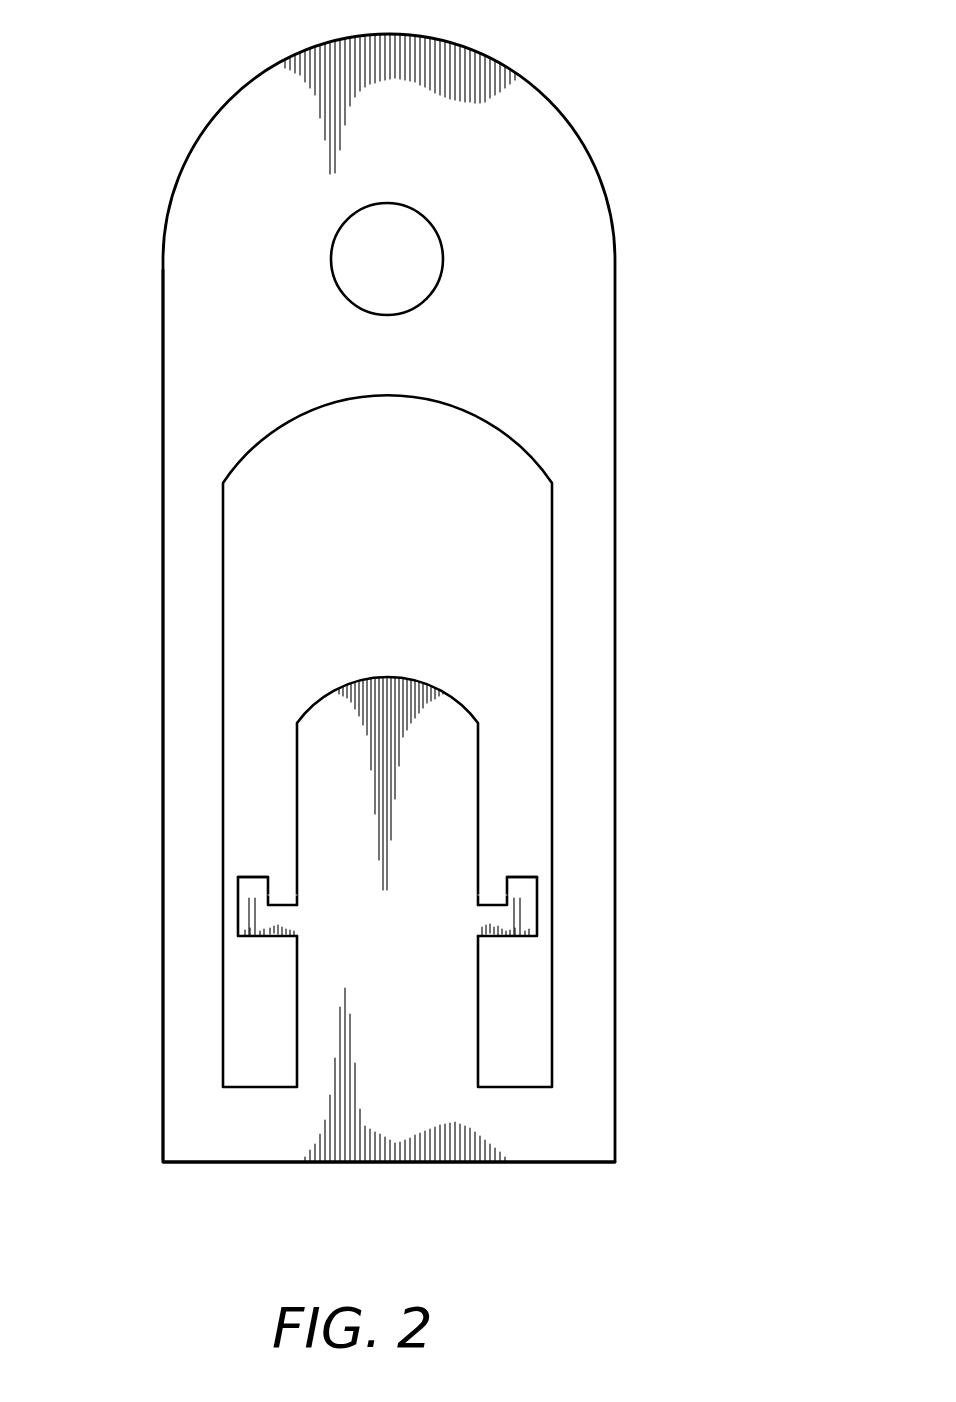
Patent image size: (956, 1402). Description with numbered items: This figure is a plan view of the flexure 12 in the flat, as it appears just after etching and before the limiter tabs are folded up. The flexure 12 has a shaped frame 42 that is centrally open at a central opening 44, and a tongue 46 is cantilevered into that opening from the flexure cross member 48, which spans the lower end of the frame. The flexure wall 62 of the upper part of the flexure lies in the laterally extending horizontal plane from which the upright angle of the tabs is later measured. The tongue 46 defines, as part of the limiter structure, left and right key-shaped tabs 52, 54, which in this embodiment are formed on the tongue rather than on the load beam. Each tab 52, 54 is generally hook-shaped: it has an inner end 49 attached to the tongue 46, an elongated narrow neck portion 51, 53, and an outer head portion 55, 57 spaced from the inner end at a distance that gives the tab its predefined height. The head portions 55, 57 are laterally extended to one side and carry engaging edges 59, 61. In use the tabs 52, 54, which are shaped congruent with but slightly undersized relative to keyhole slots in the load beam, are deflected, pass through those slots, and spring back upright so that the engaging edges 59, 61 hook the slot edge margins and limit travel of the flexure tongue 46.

The flexure 12 is at (618, 300).
The flexure wall 62 is at (530, 294).
The frame 42 is at (195, 575).
The central opening 44 is at (487, 557).
The tongue 46 is at (432, 735).
The flexure cross member 48 is at (543, 1137).
The inner end 49 is at (282, 922).
The neck portion 51 is at (254, 938).
The tab 52 is at (238, 905).
The neck portion 53 is at (498, 918).
The tab 54 is at (537, 910).
The head portion 55 is at (255, 877).
The head portion 57 is at (528, 877).
The engaging edge 59 is at (268, 888).
The engaging edge 61 is at (508, 888).